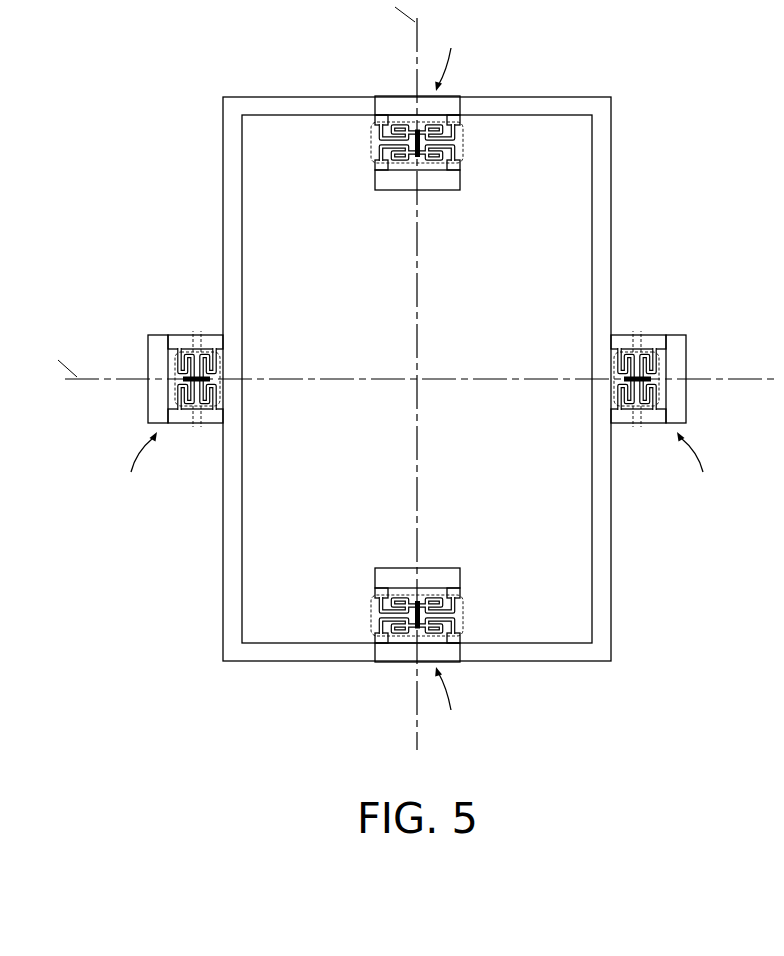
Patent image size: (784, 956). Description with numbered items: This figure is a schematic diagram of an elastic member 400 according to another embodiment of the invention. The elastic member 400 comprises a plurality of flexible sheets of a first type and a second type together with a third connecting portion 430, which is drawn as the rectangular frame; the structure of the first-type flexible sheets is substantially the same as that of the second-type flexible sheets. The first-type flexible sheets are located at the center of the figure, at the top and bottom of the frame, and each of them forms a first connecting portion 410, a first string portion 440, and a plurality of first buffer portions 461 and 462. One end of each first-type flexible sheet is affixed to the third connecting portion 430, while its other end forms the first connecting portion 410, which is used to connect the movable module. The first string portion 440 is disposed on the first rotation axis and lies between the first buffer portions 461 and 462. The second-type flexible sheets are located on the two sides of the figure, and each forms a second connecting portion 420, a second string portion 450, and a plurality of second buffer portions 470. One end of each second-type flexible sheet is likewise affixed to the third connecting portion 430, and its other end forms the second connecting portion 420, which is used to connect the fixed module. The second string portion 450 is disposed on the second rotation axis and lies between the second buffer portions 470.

The elastic member 400 is at (83, 80).
The first connecting portion 410 is at (456, 181).
The second connecting portion 420 is at (152, 399).
The third connecting portion 430 is at (602, 213).
The first string portion 440 is at (414, 130).
The second string portion 450 is at (194, 350).
The first buffer portion 461 is at (376, 152).
The first buffer portion 462 is at (378, 130).
The second buffer portion 470 is at (196, 427).